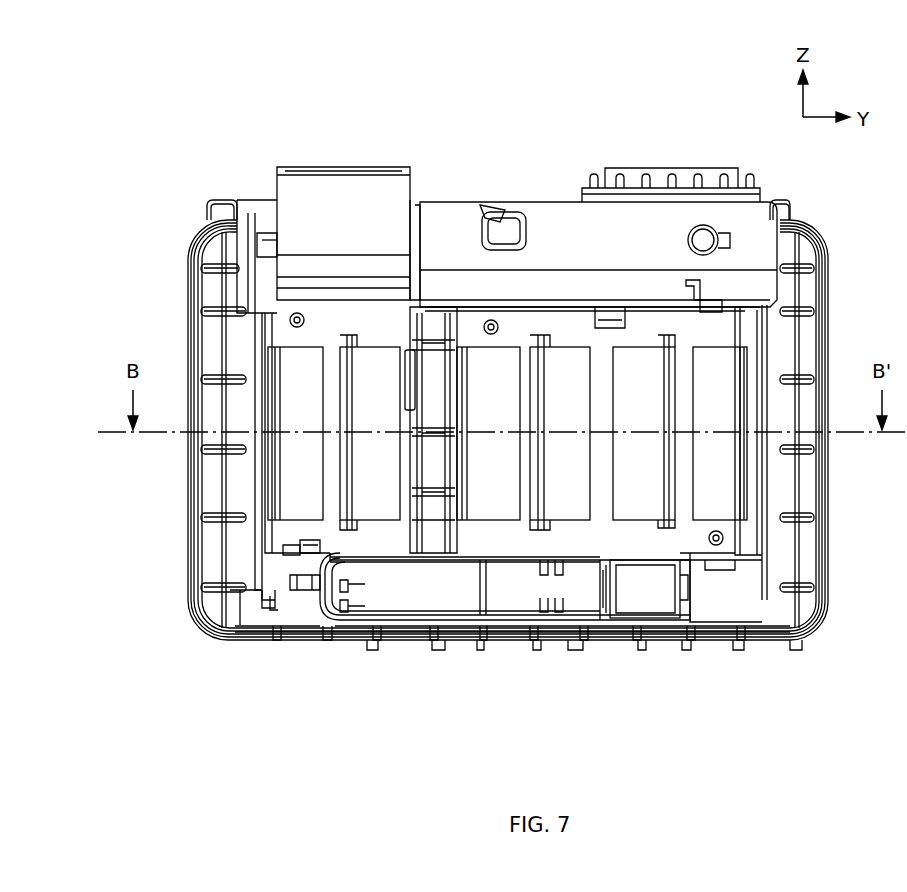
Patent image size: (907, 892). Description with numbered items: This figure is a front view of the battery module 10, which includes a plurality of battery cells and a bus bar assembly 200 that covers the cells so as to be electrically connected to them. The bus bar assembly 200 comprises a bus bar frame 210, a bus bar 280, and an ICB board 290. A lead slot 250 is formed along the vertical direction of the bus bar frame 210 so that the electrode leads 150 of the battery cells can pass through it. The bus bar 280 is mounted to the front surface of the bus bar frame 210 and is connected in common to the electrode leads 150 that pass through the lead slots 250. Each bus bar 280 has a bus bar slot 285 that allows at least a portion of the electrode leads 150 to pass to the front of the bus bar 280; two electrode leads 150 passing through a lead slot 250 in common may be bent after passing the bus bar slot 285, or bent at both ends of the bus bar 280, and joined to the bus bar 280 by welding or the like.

The battery module 10 is at (287, 110).
The electrode lead 150 is at (382, 513).
The bus bar assembly 200 is at (158, 507).
The bus bar frame 210 is at (723, 603).
The lead slot 250 is at (470, 543).
The bus bar 280 is at (582, 543).
The bus bar slot 285 is at (350, 530).
The ICB board 290 is at (655, 605).